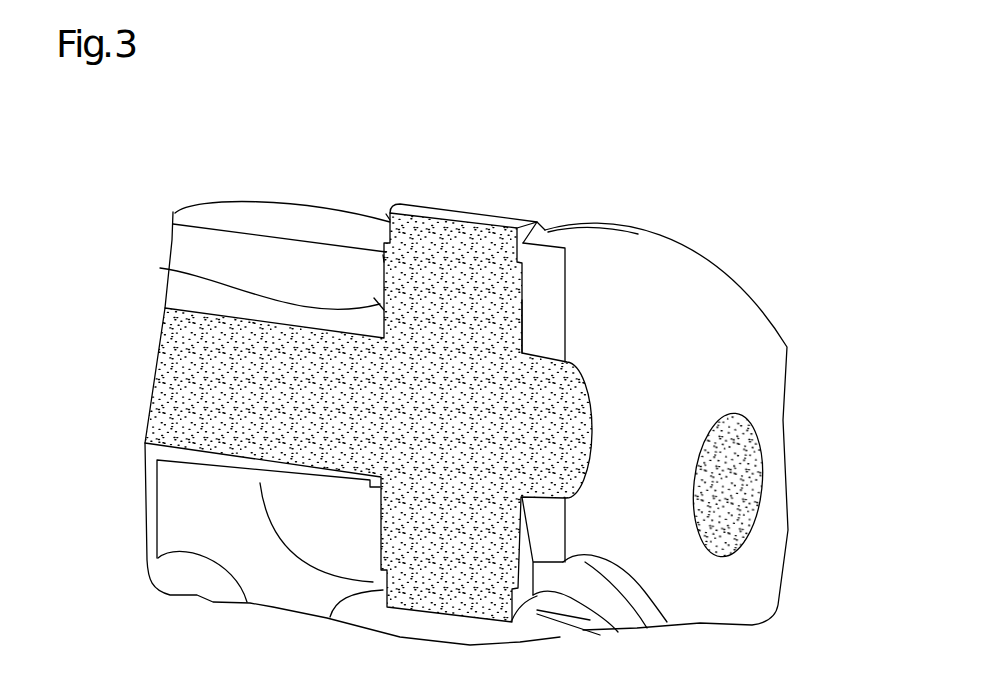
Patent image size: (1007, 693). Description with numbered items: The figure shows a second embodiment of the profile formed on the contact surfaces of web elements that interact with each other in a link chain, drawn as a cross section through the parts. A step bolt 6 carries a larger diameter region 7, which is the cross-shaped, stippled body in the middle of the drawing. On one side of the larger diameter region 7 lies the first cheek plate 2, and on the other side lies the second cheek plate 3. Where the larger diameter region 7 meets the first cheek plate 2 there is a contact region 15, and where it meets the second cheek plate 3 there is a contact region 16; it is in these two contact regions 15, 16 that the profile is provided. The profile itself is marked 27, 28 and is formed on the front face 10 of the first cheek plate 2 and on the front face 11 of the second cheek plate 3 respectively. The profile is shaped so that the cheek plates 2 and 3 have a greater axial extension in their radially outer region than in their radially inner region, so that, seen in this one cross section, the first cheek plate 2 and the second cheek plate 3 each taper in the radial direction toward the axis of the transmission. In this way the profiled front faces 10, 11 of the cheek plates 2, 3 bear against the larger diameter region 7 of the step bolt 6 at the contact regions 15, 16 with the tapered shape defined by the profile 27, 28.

The first cheek plate 2 is at (725, 380).
The second cheek plate 3 is at (237, 242).
The step bolt 6 is at (440, 245).
The larger diameter region 7 is at (459, 571).
The front face 10 is at (560, 637).
The front face 11 is at (160, 268).
The contact region 15 is at (545, 230).
The contact region 16 is at (387, 221).
The profile 27 is at (533, 333).
The profile 28 is at (383, 258).